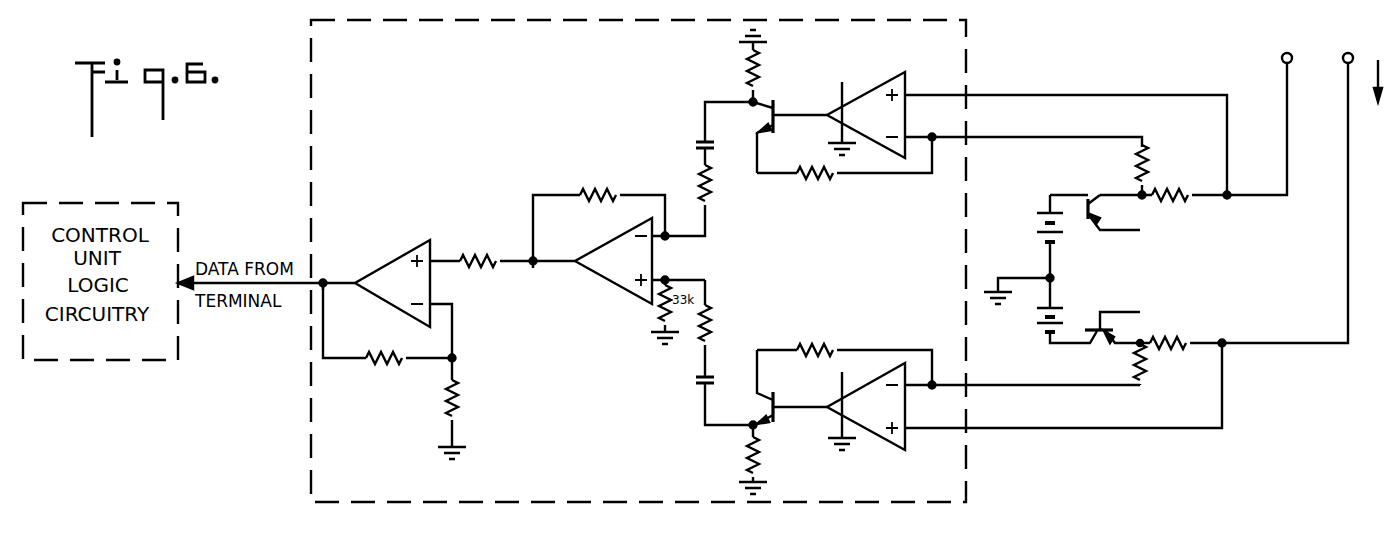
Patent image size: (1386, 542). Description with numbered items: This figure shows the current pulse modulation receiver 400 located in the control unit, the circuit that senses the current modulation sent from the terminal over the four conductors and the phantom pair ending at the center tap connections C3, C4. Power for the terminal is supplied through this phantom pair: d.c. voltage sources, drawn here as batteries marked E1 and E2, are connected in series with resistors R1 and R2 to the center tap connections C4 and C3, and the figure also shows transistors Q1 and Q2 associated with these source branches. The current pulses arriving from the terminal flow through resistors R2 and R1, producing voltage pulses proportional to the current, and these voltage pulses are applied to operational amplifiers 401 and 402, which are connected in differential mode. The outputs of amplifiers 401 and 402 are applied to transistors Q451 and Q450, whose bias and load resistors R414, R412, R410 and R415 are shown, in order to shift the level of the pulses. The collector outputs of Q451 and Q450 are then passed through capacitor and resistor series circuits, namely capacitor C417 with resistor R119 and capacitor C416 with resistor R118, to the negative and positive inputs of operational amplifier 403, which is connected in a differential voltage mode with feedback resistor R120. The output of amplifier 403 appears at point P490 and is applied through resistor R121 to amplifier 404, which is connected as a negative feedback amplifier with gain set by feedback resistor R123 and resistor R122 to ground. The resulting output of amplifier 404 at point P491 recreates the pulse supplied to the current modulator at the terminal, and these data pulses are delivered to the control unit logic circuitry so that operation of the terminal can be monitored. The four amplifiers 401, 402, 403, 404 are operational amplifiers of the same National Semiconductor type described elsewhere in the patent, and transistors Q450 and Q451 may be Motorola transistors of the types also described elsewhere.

The current pulse modulation receiver 400 is at (966, 67).
The operational amplifier 401 is at (872, 434).
The operational amplifier 402 is at (889, 80).
The operational amplifier 403 is at (617, 288).
The amplifier 404 is at (397, 258).
The point P490 is at (533, 270).
The point P491 is at (314, 283).
The resistor R121 is at (481, 262).
The resistor R122 is at (472, 408).
The resistor R123 is at (387, 336).
The resistor R120 is at (599, 213).
The resistor R119 is at (712, 192).
The resistor R118 is at (729, 328).
The capacitor C417 is at (701, 125).
The capacitor C416 is at (699, 391).
The resistor R414 is at (763, 66).
The resistor R412 is at (844, 169).
The resistor R410 is at (844, 353).
The resistor R415 is at (743, 459).
The transistor Q451 is at (790, 136).
The transistor Q450 is at (791, 396).
The transistor Q1 is at (1095, 198).
The transistor Q2 is at (1117, 341).
The resistor R1 is at (1193, 132).
The resistor R2 is at (1241, 224).
The voltage of d.c. voltage source E1 is at (1060, 236).
The voltage of d.c. voltage source E2 is at (1067, 310).
The center tap connection C3 is at (1347, 46).
The center tap connection C4 is at (1284, 46).